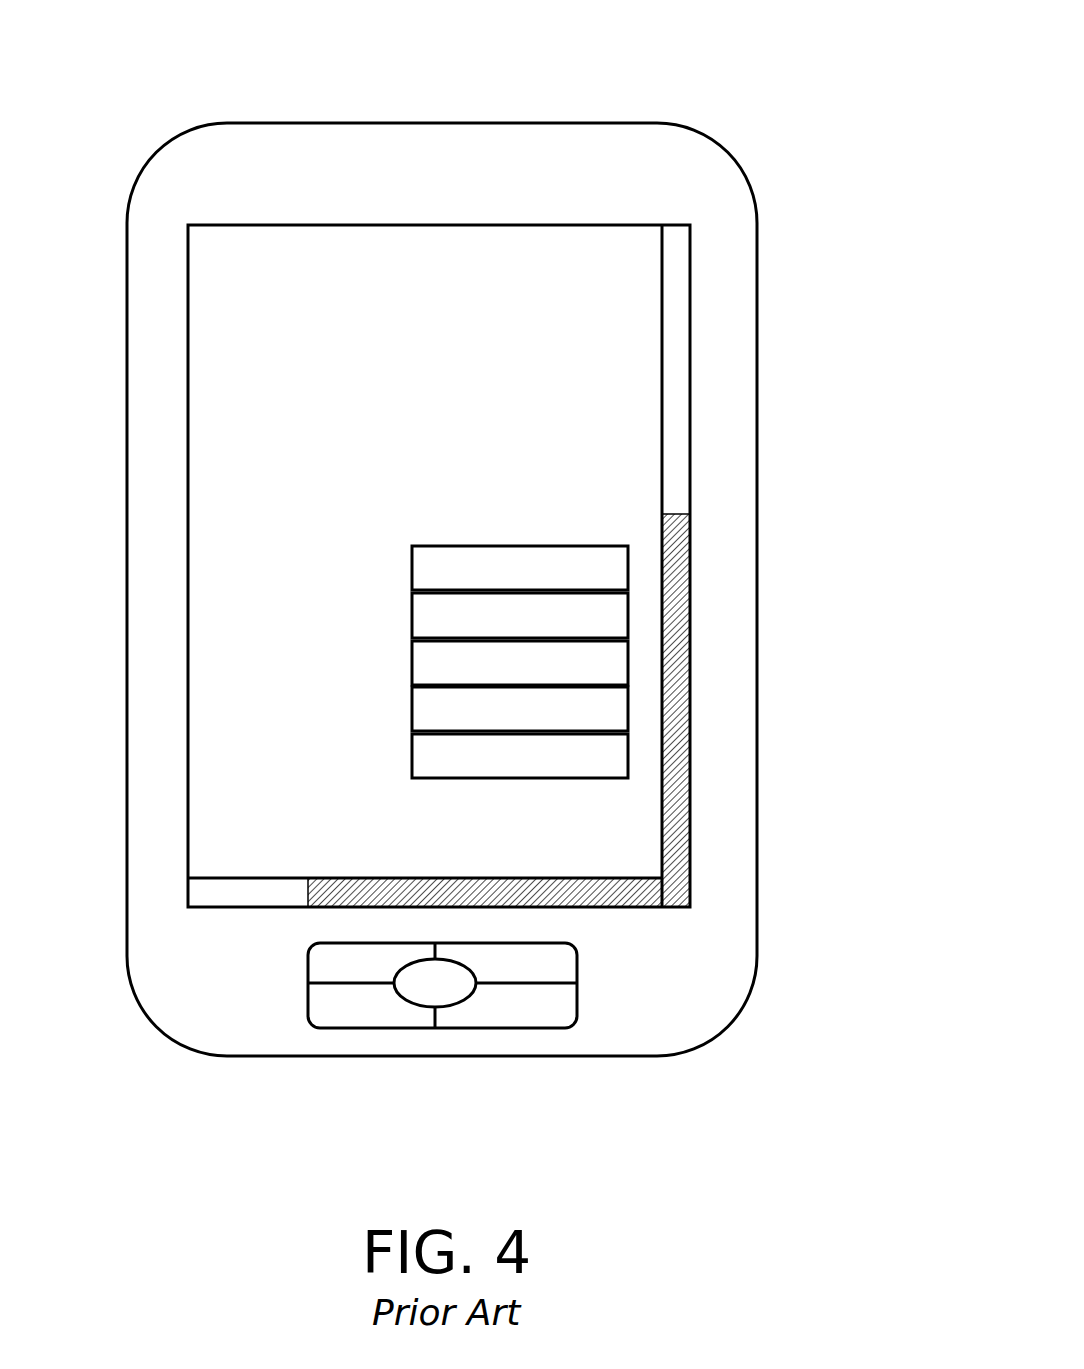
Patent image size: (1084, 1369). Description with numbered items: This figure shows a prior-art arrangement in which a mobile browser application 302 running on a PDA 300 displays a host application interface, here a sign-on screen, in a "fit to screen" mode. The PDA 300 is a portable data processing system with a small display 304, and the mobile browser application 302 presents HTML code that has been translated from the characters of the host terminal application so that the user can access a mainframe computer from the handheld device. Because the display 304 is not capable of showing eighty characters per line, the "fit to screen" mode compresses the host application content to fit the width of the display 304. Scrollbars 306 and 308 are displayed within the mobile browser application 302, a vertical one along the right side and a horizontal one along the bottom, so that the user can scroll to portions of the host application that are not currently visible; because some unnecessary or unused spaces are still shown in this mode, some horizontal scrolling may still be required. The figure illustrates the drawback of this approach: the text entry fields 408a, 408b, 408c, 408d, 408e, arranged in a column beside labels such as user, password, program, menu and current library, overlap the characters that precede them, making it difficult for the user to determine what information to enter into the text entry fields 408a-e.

The PDA 300 is at (190, 100).
The mobile browser application 302 is at (543, 297).
The display 304 is at (305, 222).
The scrollbar 306 is at (677, 362).
The scrollbar 308 is at (223, 892).
The text entry field 408a is at (578, 568).
The text entry field 408b is at (578, 618).
The text entry field 408c is at (578, 665).
The text entry field 408d is at (578, 708).
The text entry field 408e is at (578, 755).